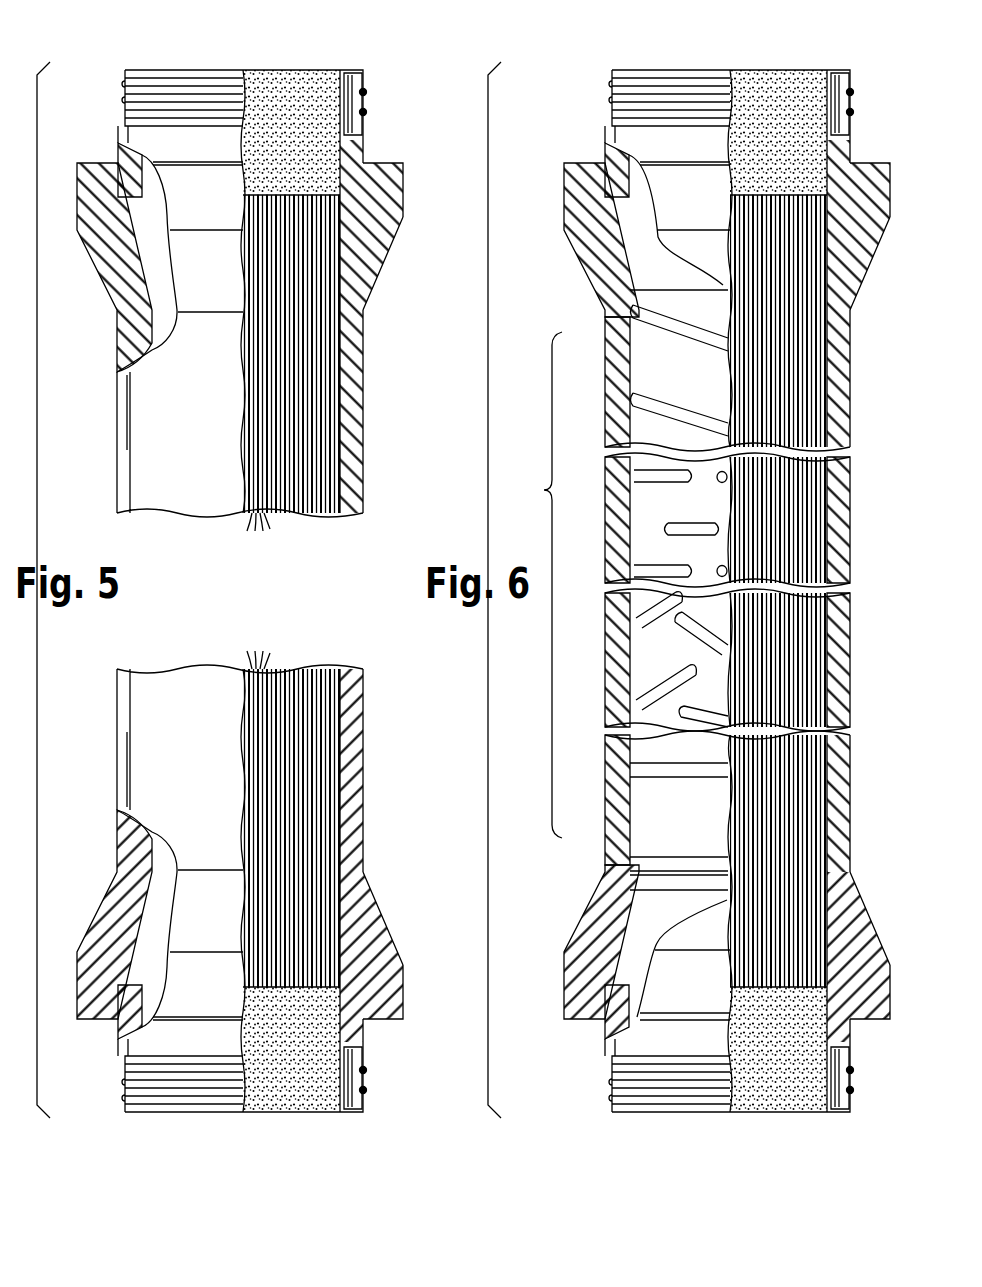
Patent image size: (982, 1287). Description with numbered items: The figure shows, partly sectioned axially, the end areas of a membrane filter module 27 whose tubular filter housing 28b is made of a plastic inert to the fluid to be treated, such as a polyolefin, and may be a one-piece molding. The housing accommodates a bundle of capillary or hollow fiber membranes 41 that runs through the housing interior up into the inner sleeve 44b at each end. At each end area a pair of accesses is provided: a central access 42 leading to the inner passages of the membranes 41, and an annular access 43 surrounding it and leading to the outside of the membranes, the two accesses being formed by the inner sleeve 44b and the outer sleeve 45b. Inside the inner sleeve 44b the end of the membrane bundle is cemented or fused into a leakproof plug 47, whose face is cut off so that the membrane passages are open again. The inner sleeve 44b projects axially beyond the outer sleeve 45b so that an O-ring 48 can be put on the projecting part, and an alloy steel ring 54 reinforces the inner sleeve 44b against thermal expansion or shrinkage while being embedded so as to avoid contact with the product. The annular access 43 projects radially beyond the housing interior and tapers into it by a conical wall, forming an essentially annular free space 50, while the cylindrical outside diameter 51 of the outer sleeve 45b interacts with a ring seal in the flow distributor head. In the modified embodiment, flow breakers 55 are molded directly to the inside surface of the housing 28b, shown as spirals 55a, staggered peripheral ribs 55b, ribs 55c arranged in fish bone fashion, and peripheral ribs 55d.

In FIG. 5, the membrane filter module 27 is at (318, 540).
In FIG. 6, the membrane filter module 27 is at (596, 856).
In FIG. 5, the filter housing 28b is at (366, 362).
In FIG. 5, the capillary or hollow fiber membranes 41 is at (290, 591).
In FIG. 6, the capillary or hollow fiber membranes 41 is at (805, 308).
In FIG. 5, the central access 42 is at (318, 68).
In FIG. 6, the central access 42 is at (782, 68).
In FIG. 5, the annular access 43 is at (107, 164).
In FIG. 6, the annular access 43 is at (592, 165).
In FIG. 5, the inner sleeve 44b is at (365, 137).
In FIG. 6, the inner sleeve 44b is at (637, 120).
In FIG. 5, the outer sleeve 45b is at (393, 208).
In FIG. 6, the outer sleeve 45b is at (572, 218).
In FIG. 5, the plug 47 is at (270, 88).
In FIG. 6, the plug 47 is at (778, 591).
In FIG. 5, the O-ring 48 is at (120, 112).
In FIG. 6, the O-ring 48 is at (850, 591).
In FIG. 5, the annular free space 50 is at (140, 250).
In FIG. 6, the annular free space 50 is at (628, 247).
In FIG. 5, the cylindrical outside diameter 51 is at (403, 190).
In FIG. 6, the cylindrical outside diameter 51 is at (870, 591).
In FIG. 5, the alloy steel ring 54 is at (348, 76).
In FIG. 6, the alloy steel ring 54 is at (840, 591).
In FIG. 6, the flow breakers 55 is at (539, 585).
In FIG. 6, the spirals 55a is at (650, 390).
In FIG. 6, the staggered peripheral ribs 55b is at (648, 572).
In FIG. 6, the fish bone ribs 55c is at (650, 700).
In FIG. 6, the peripheral ribs 55d is at (660, 855).